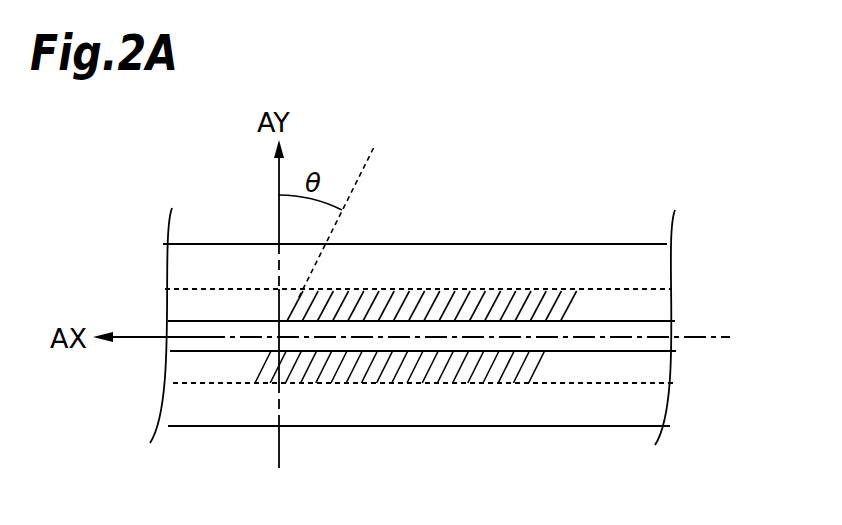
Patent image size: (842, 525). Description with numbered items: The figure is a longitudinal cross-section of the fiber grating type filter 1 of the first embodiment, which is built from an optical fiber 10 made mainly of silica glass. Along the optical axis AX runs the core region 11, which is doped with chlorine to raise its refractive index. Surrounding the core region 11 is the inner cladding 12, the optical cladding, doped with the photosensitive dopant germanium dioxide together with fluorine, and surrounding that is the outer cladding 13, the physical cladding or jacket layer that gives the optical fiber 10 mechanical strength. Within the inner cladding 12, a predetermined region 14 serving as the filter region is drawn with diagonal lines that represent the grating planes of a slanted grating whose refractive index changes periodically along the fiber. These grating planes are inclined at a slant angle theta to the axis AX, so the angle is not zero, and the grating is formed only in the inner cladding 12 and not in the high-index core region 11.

The fiber grating type filter 1 is at (637, 237).
The optical fiber 10 is at (768, 255).
The core region 11 is at (653, 330).
The inner cladding 12 is at (655, 298).
The outer cladding 13 is at (653, 258).
The predetermined region 14 is at (573, 434).